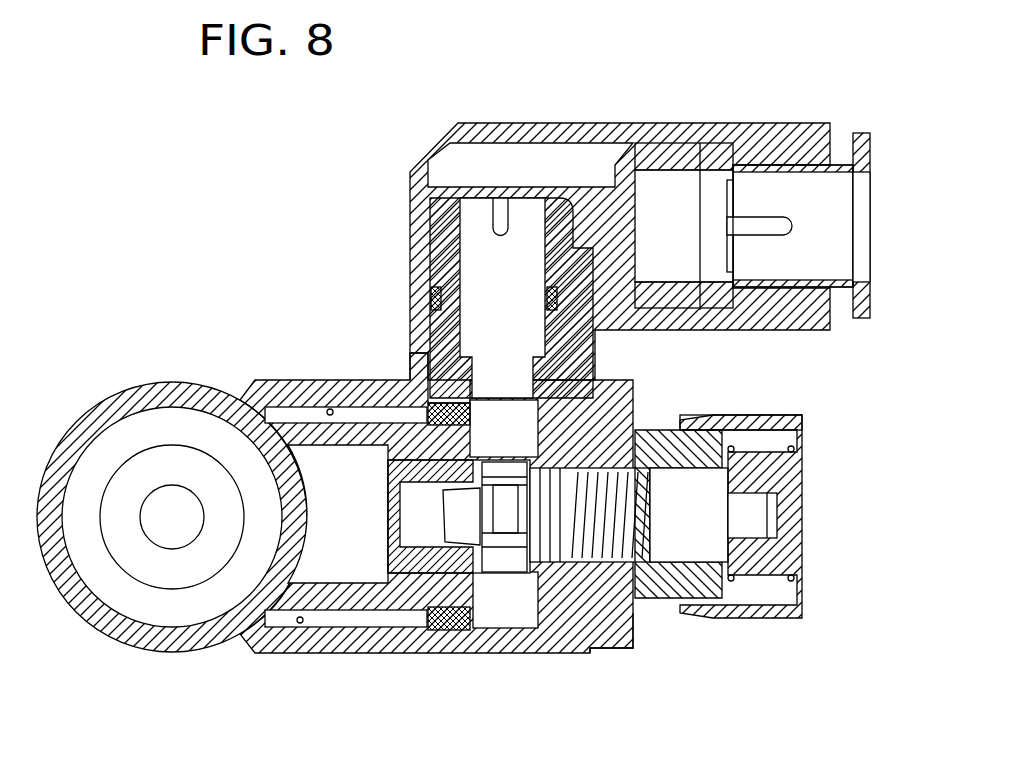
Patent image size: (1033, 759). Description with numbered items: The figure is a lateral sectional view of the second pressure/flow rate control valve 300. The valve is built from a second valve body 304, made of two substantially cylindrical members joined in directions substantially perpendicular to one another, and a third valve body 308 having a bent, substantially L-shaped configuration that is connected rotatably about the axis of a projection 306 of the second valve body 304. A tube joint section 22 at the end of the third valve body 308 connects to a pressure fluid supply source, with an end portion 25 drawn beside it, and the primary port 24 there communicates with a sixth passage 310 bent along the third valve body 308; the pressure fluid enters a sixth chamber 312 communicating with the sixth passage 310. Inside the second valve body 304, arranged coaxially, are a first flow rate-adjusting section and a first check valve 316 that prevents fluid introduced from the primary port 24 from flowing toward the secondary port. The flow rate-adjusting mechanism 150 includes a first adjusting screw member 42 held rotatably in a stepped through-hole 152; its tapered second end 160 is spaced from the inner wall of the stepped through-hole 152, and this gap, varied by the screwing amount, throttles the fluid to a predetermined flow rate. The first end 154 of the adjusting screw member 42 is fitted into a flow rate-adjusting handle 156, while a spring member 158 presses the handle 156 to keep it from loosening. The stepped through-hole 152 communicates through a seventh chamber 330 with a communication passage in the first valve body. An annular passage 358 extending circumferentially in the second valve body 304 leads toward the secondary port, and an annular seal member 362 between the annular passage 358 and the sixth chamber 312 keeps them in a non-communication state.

The second pressure/flow rate control valve 300 is at (295, 123).
The third valve body 308 is at (556, 130).
The tube joint section 22 is at (763, 140).
The flange 25 is at (858, 130).
The primary port 24 is at (853, 280).
The projection 306 is at (440, 245).
The sixth passage 310 is at (525, 289).
The annular seal member 362 is at (445, 393).
The annular passage 358 is at (327, 406).
The sixth chamber 312 is at (600, 420).
The seventh chamber 330 is at (368, 536).
The first check valve 316 is at (413, 563).
The second valve body 304 is at (445, 610).
The second end 160 is at (460, 520).
The first adjusting screw member 42 is at (640, 540).
The flow rate-adjusting mechanism 150 is at (745, 414).
The spring member 158 is at (802, 427).
The flow rate-adjusting handle 156 is at (798, 492).
The first end 154 is at (760, 517).
The stepped through-hole 152 is at (565, 590).